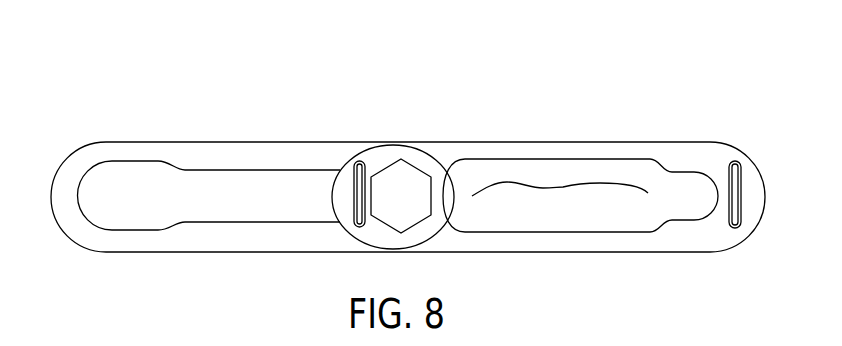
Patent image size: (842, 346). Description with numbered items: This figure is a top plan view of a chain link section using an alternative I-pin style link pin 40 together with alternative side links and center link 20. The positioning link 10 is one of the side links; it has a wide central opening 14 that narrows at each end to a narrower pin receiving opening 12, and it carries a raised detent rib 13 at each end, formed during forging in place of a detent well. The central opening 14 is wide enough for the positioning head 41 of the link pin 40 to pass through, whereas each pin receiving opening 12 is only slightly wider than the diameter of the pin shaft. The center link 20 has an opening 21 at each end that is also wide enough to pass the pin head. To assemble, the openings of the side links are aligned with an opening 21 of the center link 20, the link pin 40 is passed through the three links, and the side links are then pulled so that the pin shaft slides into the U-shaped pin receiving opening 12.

The positioning link 10 is at (643, 142).
The pin receiving opening 12 is at (690, 190).
The detent rib 13 is at (350, 176).
The central opening 14 is at (563, 186).
The center link 20 is at (189, 142).
The opening 21 is at (108, 188).
The link pin 40 is at (417, 162).
The positioning head 41 is at (397, 178).